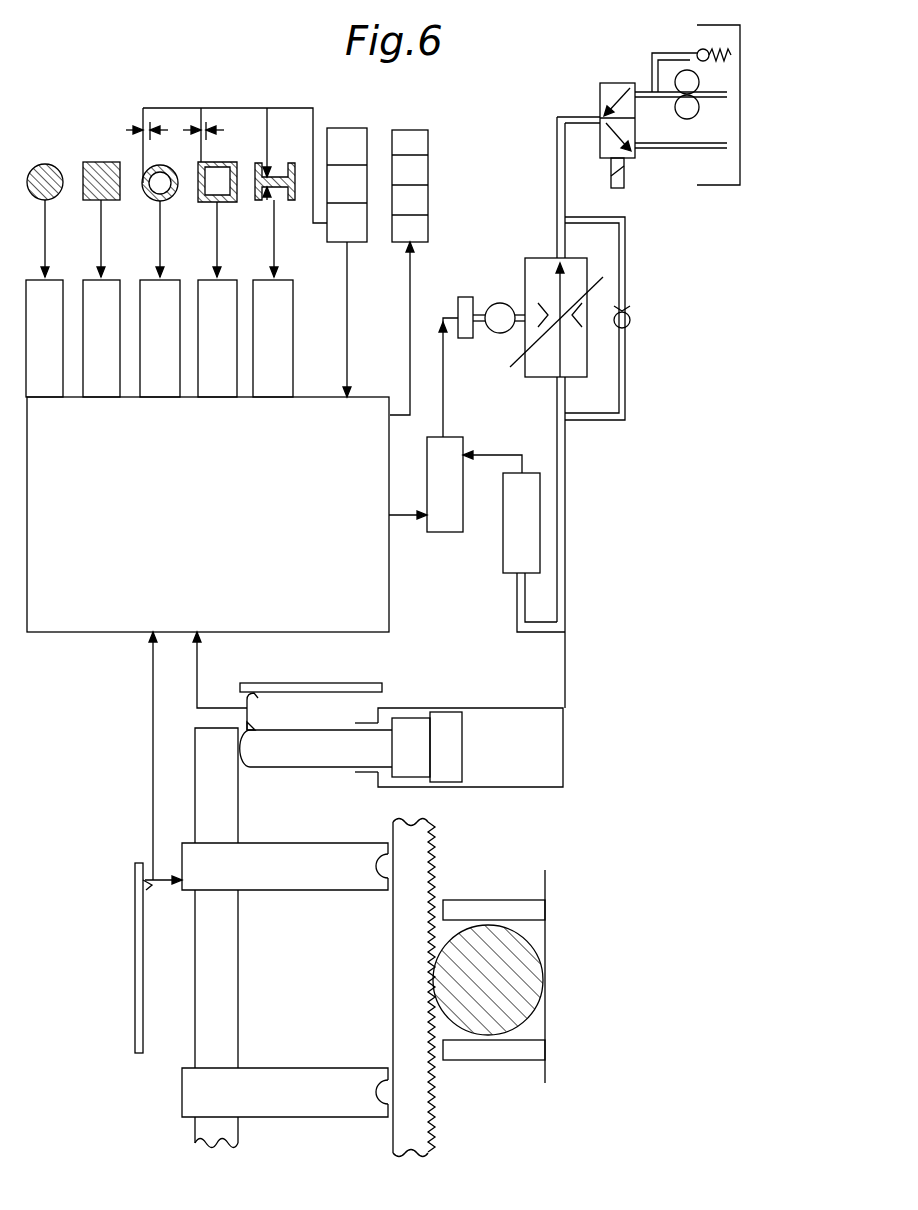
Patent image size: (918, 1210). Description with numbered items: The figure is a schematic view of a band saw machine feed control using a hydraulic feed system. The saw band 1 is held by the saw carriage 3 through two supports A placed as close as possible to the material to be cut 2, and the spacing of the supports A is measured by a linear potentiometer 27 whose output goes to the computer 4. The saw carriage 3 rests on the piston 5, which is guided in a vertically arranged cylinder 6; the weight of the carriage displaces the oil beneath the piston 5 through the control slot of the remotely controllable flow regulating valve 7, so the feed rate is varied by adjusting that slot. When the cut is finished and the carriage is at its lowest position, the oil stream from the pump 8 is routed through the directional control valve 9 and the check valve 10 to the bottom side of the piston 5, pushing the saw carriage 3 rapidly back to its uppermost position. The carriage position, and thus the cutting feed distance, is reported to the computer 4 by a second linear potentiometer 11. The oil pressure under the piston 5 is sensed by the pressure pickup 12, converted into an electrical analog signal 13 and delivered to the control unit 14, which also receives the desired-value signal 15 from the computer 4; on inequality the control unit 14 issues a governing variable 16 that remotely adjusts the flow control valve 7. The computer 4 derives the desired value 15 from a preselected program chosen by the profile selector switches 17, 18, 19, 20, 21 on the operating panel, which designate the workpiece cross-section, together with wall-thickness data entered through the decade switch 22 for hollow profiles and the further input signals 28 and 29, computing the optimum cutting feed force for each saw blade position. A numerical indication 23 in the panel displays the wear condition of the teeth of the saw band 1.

The saw band 1 is at (398, 942).
The material to be cut 2 is at (525, 953).
The saw carriage 3 is at (228, 946).
The computer 4 is at (373, 595).
The piston 5 is at (308, 763).
The cylinder 6 is at (518, 775).
The flow regulating valve 7 is at (535, 286).
The pump 8 is at (697, 112).
The directional control valve 9 is at (616, 80).
The check valve 10 is at (630, 326).
The linear potentiometer 11 is at (313, 683).
The pressure pickup 12 is at (516, 555).
The analog signal 13 is at (506, 452).
The control unit 14 is at (458, 452).
The desired-value signal 15 is at (403, 518).
The governing variable 16 is at (443, 371).
The selector switch 17 is at (44, 265).
The selector switch 18 is at (101, 263).
The selector switch 19 is at (153, 252).
The selector switch 20 is at (210, 252).
The selector switch 21 is at (275, 252).
The decade switch 22 is at (255, 245).
The numerical indication 23 is at (409, 254).
The linear potentiometer 27 is at (133, 951).
The signal 28 is at (148, 671).
The signal 29 is at (205, 666).
The supports A is at (338, 880).